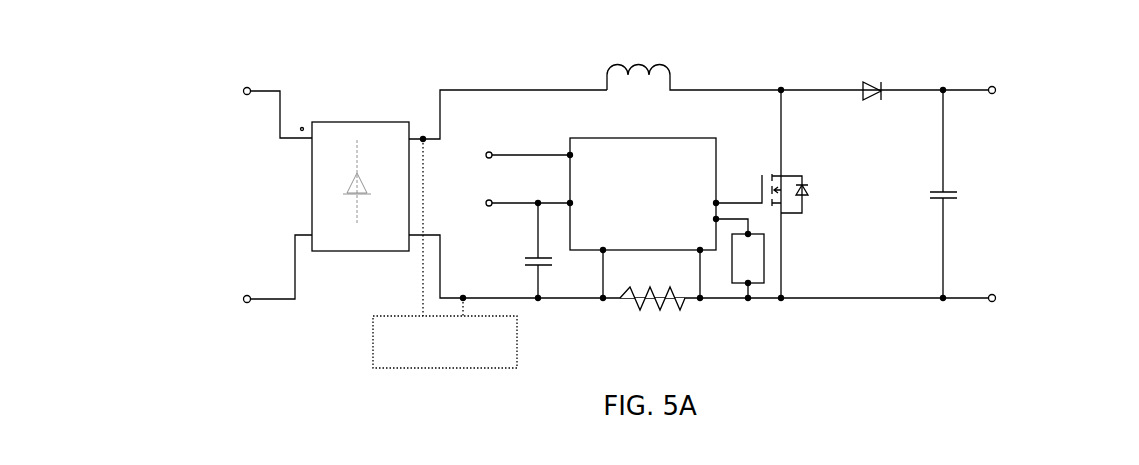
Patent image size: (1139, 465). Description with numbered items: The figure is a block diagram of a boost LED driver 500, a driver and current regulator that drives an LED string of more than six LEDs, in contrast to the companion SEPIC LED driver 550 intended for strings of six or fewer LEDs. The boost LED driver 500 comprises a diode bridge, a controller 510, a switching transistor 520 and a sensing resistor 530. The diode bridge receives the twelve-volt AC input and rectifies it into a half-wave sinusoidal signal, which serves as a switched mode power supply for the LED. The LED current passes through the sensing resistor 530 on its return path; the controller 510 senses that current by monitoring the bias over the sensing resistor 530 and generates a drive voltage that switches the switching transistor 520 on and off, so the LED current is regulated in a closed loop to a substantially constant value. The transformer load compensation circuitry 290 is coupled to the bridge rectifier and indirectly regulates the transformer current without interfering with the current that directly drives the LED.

The boost LED driver 500 is at (614, 202).
The controller 510 is at (570, 138).
The switching transistor 520 is at (815, 210).
The sensing resistor 530 is at (684, 322).
The transformer load compensation circuitry 290 is at (391, 368).
The SEPIC LED driver 550 is at (982, 462).